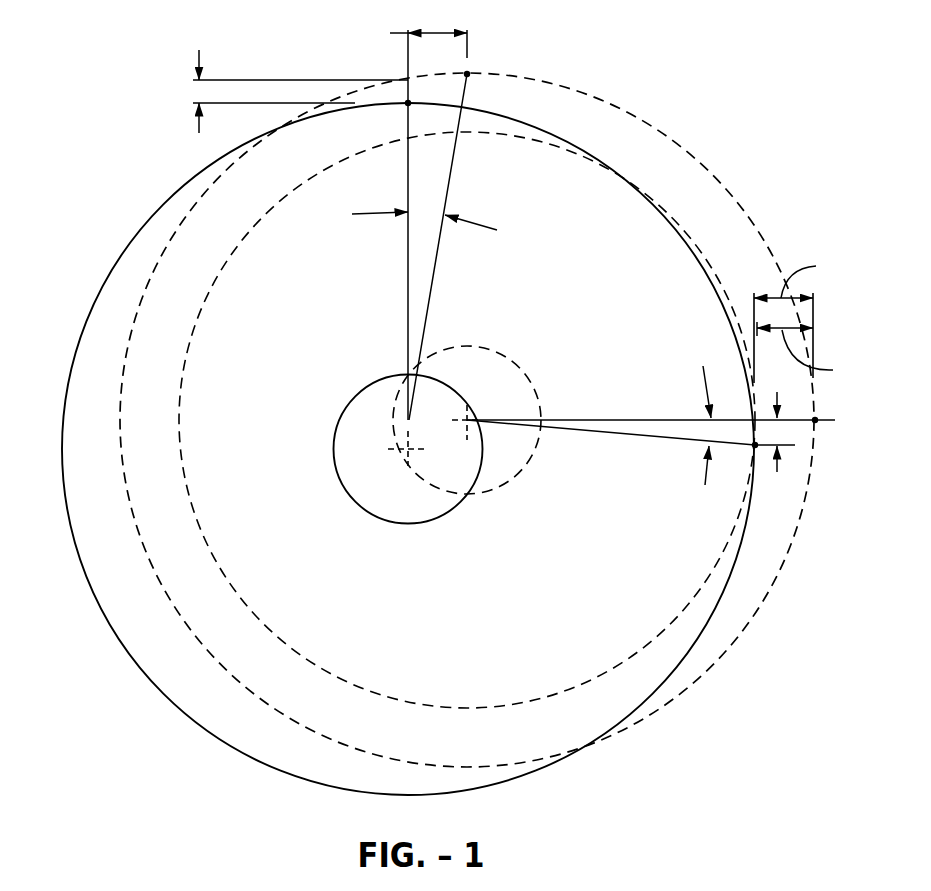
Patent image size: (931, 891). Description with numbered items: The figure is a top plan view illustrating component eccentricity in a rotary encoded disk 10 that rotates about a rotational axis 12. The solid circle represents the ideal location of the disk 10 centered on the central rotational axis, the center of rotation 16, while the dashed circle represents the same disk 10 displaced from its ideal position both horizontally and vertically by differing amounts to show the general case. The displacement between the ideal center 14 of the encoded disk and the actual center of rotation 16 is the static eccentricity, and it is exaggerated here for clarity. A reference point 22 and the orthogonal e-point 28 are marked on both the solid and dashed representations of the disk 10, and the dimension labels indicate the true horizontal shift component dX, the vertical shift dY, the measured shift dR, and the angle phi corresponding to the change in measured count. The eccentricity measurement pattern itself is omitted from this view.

The rotary encoded disk 10 is at (127, 240).
The rotational axis 12 is at (407, 445).
The ideal center 14 is at (478, 414).
The center of rotation 16 is at (398, 462).
The reference point 22 is at (816, 421).
The orthogonal e-point 28 is at (407, 105).